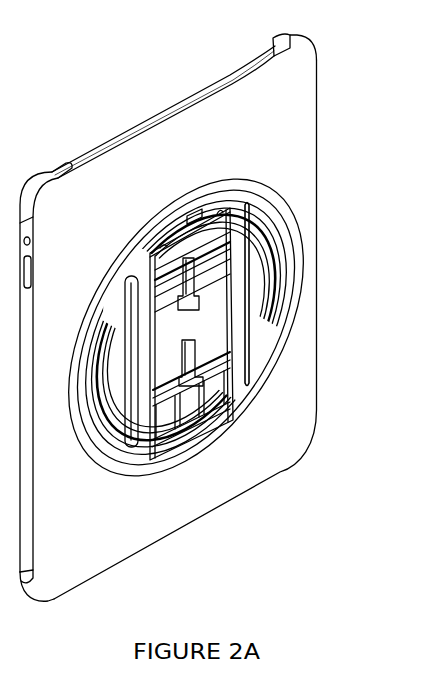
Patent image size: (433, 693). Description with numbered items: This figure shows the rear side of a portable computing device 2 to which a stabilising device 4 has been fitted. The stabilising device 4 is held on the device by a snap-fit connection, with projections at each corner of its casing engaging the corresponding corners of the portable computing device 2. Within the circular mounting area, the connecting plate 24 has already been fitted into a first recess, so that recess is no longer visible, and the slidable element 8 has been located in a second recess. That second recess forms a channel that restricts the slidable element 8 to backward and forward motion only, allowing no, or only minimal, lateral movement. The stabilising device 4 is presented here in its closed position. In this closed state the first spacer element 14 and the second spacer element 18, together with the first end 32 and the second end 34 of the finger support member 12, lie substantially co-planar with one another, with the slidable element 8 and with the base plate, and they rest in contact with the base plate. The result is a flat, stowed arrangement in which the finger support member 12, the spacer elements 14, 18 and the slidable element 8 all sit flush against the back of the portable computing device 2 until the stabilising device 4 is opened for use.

The portable computing device 2 is at (100, 147).
The stabilising device 4 is at (336, 145).
The slidable element 8 is at (217, 417).
The finger support member 12 is at (233, 312).
The first spacer element 14 is at (217, 373).
The second spacer element 18 is at (215, 263).
The connecting plate 24 is at (223, 230).
The first end of finger support member 32 is at (223, 303).
The second end of finger support member 34 is at (172, 337).